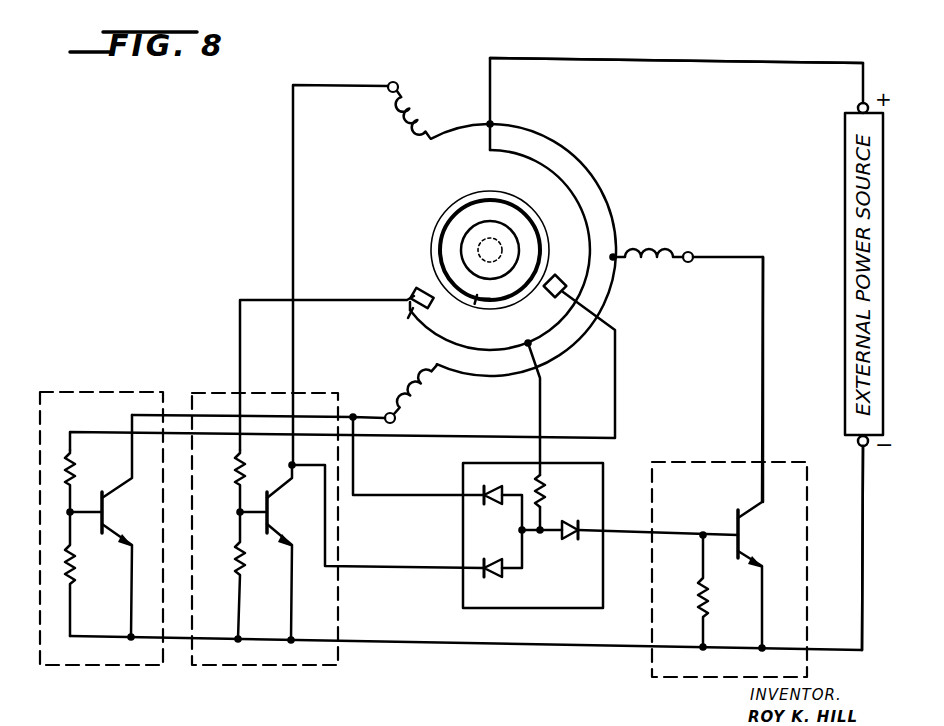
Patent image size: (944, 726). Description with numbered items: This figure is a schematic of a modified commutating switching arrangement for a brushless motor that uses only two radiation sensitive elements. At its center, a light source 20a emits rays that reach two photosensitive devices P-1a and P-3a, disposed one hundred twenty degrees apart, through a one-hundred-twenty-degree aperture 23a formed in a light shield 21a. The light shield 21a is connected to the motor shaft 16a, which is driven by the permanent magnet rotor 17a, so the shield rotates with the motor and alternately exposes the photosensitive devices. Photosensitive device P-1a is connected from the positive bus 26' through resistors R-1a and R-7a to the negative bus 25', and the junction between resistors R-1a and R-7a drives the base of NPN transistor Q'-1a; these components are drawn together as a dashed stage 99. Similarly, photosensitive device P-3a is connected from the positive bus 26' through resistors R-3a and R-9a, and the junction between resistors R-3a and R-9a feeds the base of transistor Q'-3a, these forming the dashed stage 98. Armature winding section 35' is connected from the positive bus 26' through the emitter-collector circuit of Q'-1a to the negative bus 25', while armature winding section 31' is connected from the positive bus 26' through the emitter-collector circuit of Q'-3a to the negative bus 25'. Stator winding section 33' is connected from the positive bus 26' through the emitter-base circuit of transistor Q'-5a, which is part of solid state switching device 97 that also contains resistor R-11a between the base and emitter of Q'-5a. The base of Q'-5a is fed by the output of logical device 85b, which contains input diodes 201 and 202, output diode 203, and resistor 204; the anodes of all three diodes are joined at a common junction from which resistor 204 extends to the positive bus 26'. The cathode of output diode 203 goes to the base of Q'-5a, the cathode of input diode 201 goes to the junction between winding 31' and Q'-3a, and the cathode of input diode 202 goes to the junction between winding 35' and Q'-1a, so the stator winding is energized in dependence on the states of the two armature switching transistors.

The armature winding section 31' is at (424, 110).
The positive bus 26' is at (676, 82).
The stator winding section 33' is at (655, 241).
The armature winding section 35' is at (424, 394).
The motor shaft 16a is at (498, 236).
The light shield 21a is at (533, 229).
The light source 20a is at (519, 253).
The aperture 23a is at (453, 256).
The photosensitive device P-3a is at (400, 296).
The permanent magnet rotor 17a is at (497, 312).
The photosensitive device P-1a is at (555, 298).
The resistor R-1a is at (75, 463).
The NPN transistor Q'-1a is at (118, 526).
The resistor R-7a is at (75, 582).
The resistor R-3a is at (240, 463).
The transistor Q'-3a is at (283, 552).
The resistor R-9a is at (238, 566).
The amplifier stage 99 is at (100, 666).
The amplifier stage 98 is at (242, 666).
The solid state switching device 97 is at (712, 462).
The transistor Q'-5a is at (771, 452).
The resistor R-11a is at (700, 582).
The negative bus 25' is at (839, 548).
The resistor 204 is at (552, 491).
The input diode 202 is at (494, 503).
The input diode 201 is at (494, 580).
The output diode 203 is at (568, 542).
The logical device 85b is at (578, 610).